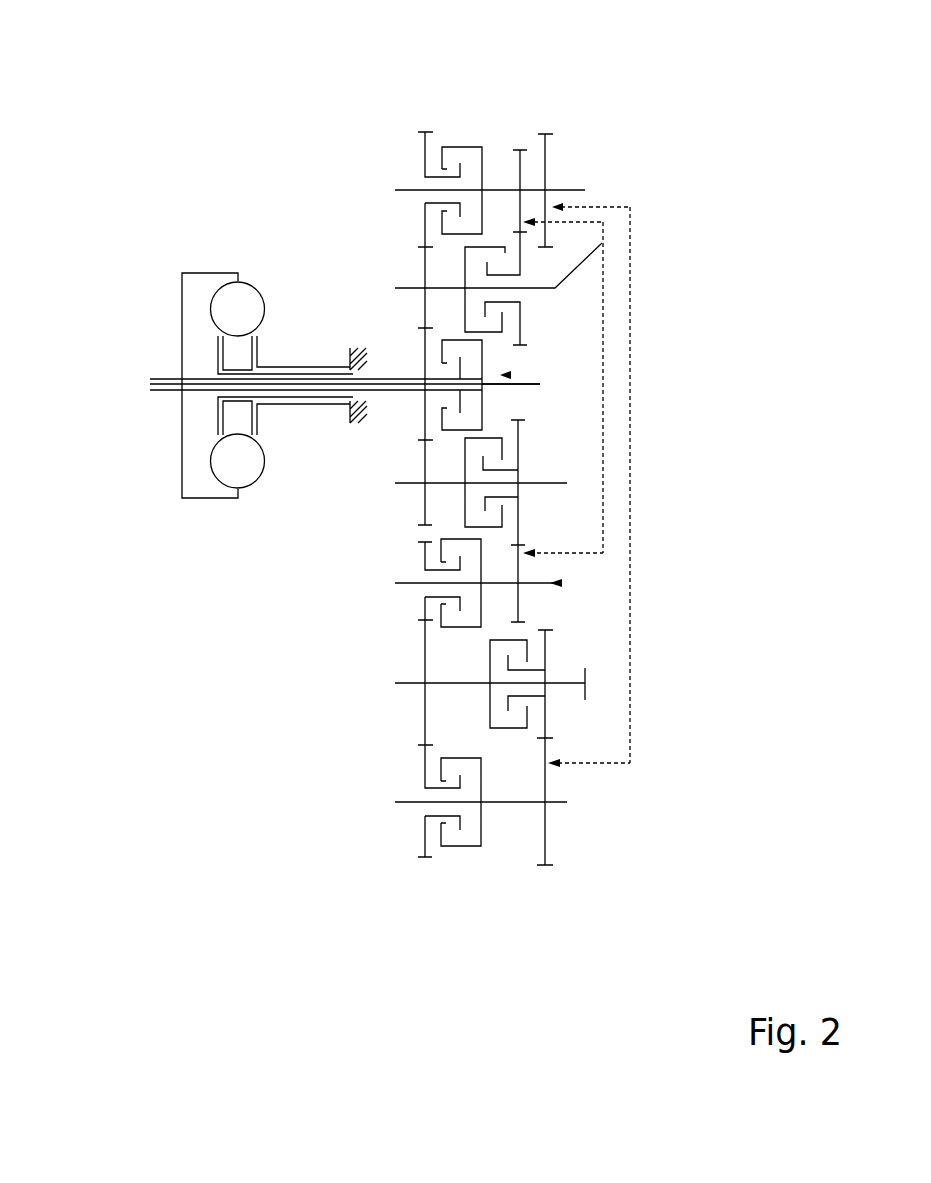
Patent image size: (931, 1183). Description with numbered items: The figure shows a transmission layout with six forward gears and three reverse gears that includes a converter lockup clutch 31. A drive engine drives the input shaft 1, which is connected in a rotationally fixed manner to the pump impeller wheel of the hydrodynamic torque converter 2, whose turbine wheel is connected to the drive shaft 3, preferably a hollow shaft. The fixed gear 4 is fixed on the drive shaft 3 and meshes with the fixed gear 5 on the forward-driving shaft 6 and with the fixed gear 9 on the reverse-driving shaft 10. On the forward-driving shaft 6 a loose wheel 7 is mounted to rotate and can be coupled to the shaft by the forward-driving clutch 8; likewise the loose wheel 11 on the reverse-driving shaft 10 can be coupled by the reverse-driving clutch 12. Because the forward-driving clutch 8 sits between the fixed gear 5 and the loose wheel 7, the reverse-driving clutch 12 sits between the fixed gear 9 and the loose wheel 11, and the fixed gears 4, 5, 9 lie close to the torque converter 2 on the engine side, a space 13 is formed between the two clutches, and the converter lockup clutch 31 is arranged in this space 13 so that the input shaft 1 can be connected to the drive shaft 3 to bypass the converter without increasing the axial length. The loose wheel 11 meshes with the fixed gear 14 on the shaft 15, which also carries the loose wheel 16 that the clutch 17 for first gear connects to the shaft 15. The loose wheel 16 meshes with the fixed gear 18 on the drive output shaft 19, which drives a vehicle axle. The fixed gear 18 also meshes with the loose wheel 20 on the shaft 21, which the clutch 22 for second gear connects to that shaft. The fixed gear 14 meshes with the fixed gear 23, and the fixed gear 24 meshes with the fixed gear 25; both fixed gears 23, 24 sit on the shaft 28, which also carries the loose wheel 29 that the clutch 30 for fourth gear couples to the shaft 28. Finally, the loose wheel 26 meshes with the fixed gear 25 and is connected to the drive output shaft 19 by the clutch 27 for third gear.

The input shaft 1 is at (150, 380).
The hydrodynamic torque converter 2 is at (244, 270).
The drive shaft 3 is at (390, 379).
The fixed gear 4 is at (418, 438).
The fixed gear 5 is at (420, 256).
The forward-driving shaft 6 is at (602, 243).
The loose wheel 7 is at (517, 323).
The forward-driving clutch 8 is at (490, 340).
The fixed gear 9 is at (418, 522).
The reverse-driving shaft 10 is at (557, 486).
The loose wheel 11 is at (520, 446).
The reverse-driving clutch 12 is at (518, 421).
The space 13 is at (502, 375).
The fixed gear 14 is at (522, 600).
The shaft 15 is at (560, 583).
The loose wheel 16 is at (423, 609).
The clutch for first gear 17 is at (423, 654).
The fixed gear 18 is at (423, 712).
The drive output shaft 19 is at (557, 686).
The loose wheel 20 is at (423, 766).
The shaft 21 is at (555, 804).
The clutch for second gear 22 is at (458, 848).
The fixed gear 23 is at (519, 180).
The fixed gear 24 is at (548, 184).
The fixed gear 25 is at (547, 848).
The loose wheel 26 is at (546, 720).
The clutch for third gear 27 is at (524, 622).
The shaft 28 is at (570, 190).
The loose wheel 29 is at (423, 152).
The clutch for fourth gear 30 is at (455, 147).
The converter lockup clutch 31 is at (483, 399).